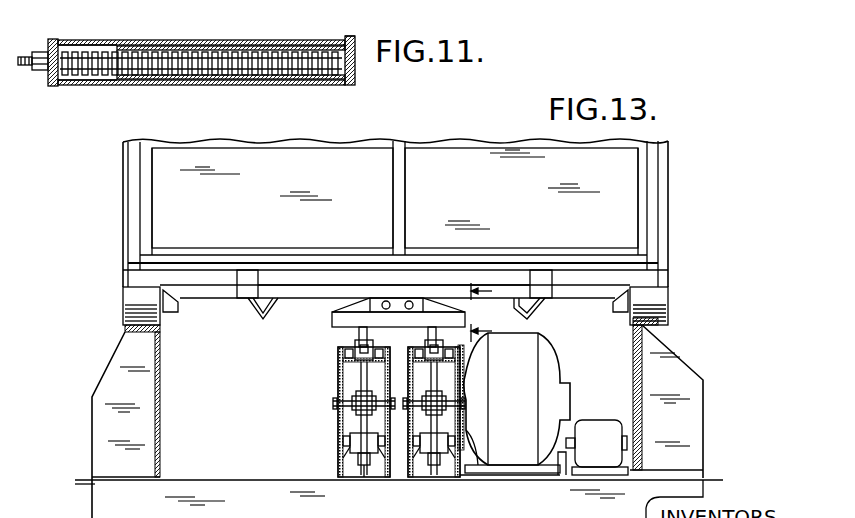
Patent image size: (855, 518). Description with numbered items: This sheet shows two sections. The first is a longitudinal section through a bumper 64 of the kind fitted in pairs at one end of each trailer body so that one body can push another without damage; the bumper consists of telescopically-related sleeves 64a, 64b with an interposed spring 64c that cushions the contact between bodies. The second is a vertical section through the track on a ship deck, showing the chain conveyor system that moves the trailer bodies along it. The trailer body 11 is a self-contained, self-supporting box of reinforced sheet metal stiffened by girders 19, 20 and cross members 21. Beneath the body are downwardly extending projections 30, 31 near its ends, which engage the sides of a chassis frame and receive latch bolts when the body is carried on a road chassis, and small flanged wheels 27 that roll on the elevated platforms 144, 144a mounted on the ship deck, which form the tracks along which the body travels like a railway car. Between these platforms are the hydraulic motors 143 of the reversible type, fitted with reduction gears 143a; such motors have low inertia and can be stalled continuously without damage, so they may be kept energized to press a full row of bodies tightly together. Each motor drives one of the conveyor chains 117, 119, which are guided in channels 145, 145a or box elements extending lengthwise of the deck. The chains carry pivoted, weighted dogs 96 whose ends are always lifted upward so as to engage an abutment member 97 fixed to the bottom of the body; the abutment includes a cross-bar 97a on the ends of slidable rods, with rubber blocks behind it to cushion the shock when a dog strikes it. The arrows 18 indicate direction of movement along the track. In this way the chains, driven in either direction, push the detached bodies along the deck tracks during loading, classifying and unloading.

In FIG. 11, the bumper 64 is at (228, 40).
In FIG. 11, the telescopic sleeve 64a is at (160, 46).
In FIG. 11, the telescopic sleeve 64b is at (334, 84).
In FIG. 11, the spring 64c is at (92, 48).
In FIG. 13, the trailer body 11 is at (480, 200).
In FIG. 13, the stiffening girder 19 is at (244, 271).
In FIG. 13, the stiffening girder 20 is at (540, 271).
In FIG. 13, the cross member 21 is at (302, 272).
In FIG. 13, the flanged wheel 27 is at (125, 309).
In FIG. 13, the downwardly extending projection 30 is at (258, 316).
In FIG. 13, the downwardly extending projection 31 is at (538, 312).
In FIG. 13, the direction arrow 18 is at (482, 312).
In FIG. 13, the pivoted dog 96 is at (358, 333).
In FIG. 13, the abutment member 97 is at (353, 300).
In FIG. 13, the cross-bar 97a is at (334, 321).
In FIG. 13, the conveyor chain 117 is at (435, 477).
In FIG. 13, the conveyor chain 119 is at (365, 477).
In FIG. 13, the hydraulic motor 143 is at (598, 421).
In FIG. 13, the reduction gear 143a is at (533, 363).
In FIG. 13, the elevated platform 144 is at (150, 414).
In FIG. 13, the elevated platform 144a is at (700, 401).
In FIG. 13, the channel 145 is at (338, 393).
In FIG. 13, the channel 145a is at (463, 477).